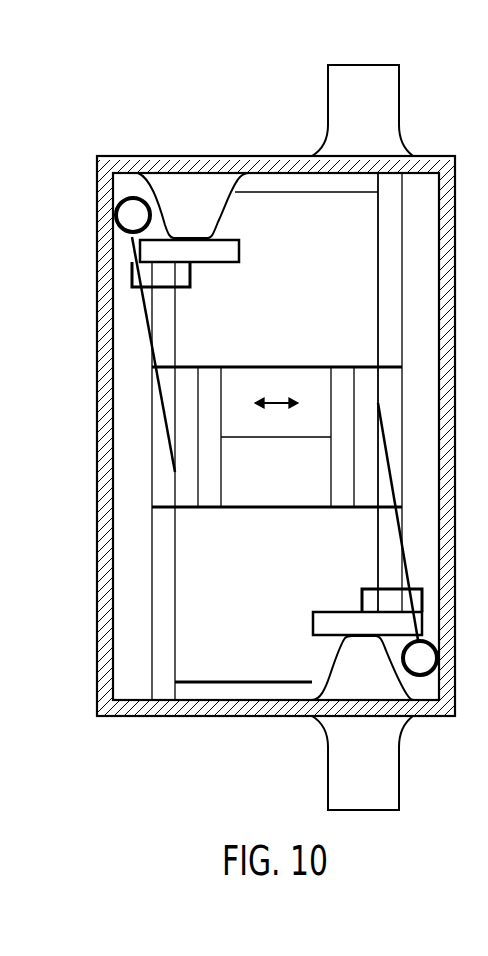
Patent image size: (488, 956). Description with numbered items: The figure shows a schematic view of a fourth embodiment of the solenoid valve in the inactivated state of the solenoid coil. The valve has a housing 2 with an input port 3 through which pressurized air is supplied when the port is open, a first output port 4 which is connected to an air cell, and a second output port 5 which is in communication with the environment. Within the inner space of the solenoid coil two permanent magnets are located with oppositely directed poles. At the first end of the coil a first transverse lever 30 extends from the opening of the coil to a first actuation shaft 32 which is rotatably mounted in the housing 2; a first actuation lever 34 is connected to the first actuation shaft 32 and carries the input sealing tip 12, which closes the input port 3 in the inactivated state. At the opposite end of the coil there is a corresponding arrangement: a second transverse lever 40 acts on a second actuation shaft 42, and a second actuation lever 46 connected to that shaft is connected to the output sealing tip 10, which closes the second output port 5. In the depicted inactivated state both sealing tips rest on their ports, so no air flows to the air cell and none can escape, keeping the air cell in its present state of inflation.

The housing 2 is at (188, 717).
The input port 3 is at (399, 790).
The first output port 4 is at (399, 116).
The second output port 5 is at (235, 188).
The output sealing tip 10 is at (239, 250).
The input sealing tip 12 is at (313, 622).
The first transverse lever 30 is at (390, 481).
The first actuation shaft 32 is at (422, 662).
The first actuation lever 34 is at (362, 593).
The second transverse lever 40 is at (155, 353).
The second actuation shaft 42 is at (133, 213).
The second actuation lever 46 is at (190, 275).